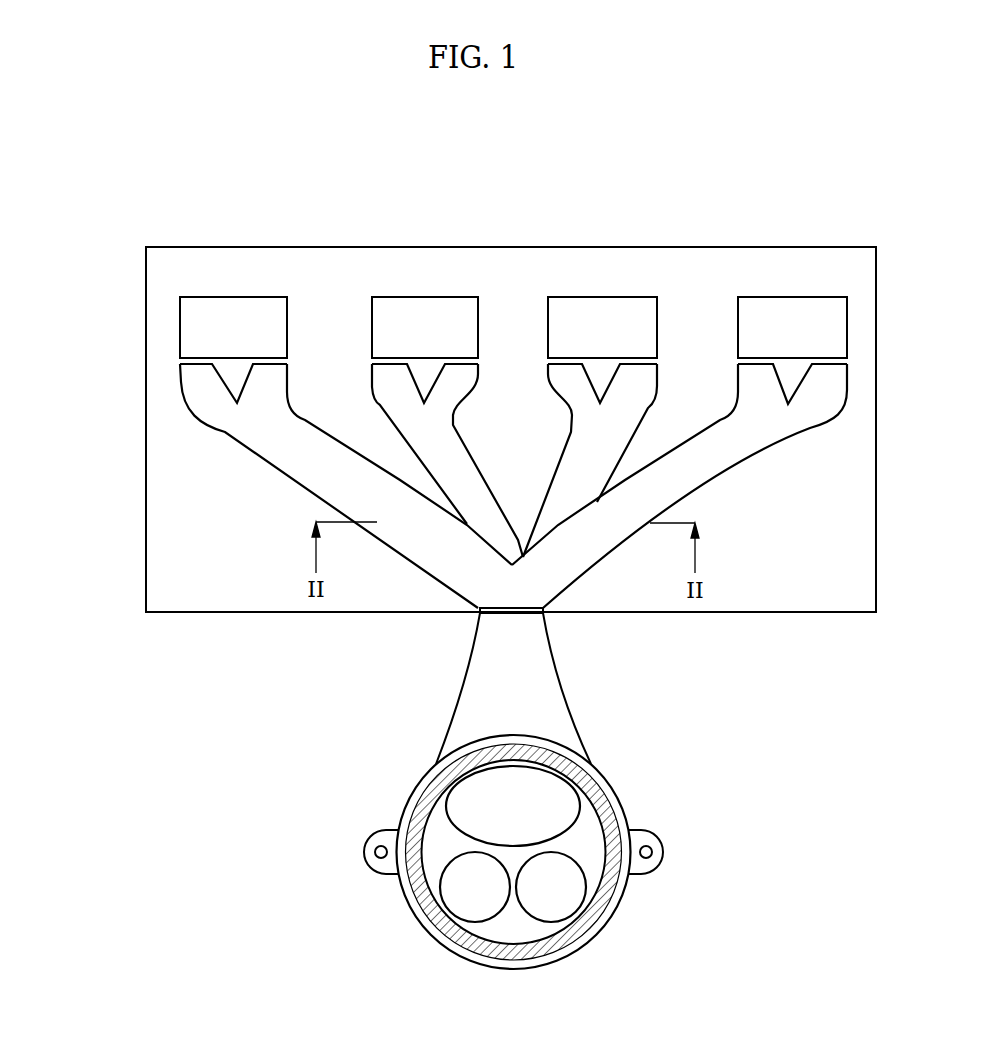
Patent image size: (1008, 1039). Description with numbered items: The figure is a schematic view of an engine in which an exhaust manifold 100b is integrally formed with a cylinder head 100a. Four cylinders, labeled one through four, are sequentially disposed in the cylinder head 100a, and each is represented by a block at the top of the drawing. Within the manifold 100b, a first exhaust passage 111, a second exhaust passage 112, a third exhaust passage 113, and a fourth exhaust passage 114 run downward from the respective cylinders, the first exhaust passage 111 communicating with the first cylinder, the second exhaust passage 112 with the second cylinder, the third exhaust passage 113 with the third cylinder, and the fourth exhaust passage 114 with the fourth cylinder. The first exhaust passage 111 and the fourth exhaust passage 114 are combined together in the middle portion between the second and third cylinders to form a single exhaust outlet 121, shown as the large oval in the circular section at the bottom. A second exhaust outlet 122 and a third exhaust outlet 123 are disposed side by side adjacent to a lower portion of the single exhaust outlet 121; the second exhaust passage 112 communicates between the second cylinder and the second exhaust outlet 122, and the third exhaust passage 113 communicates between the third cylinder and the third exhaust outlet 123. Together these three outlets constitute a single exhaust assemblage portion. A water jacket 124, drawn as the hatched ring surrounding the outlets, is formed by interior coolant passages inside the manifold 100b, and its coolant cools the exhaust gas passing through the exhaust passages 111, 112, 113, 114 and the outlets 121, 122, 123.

The cylinder head 100a is at (220, 614).
The exhaust manifold 100b is at (130, 363).
The first exhaust passage 111 is at (252, 438).
The second exhaust passage 112 is at (407, 424).
The third exhaust passage 113 is at (617, 424).
The fourth exhaust passage 114 is at (773, 440).
The single exhaust outlet 121 is at (570, 805).
The second exhaust outlet 122 is at (462, 907).
The third exhaust outlet 123 is at (570, 903).
The water jacket 124 is at (610, 892).